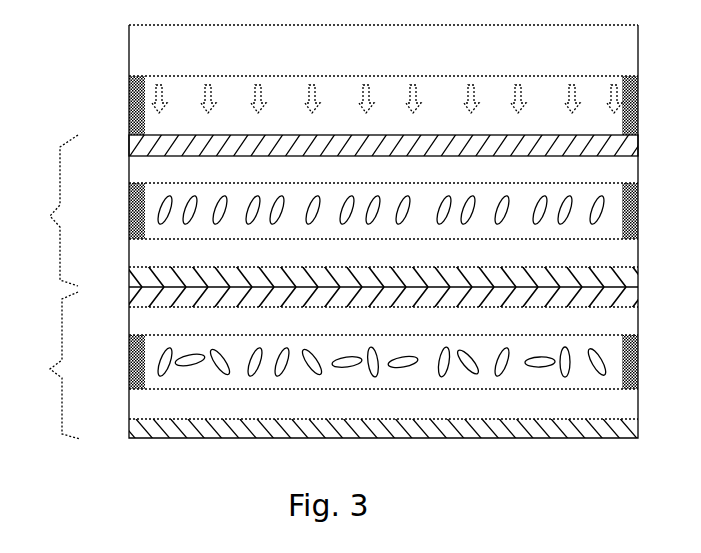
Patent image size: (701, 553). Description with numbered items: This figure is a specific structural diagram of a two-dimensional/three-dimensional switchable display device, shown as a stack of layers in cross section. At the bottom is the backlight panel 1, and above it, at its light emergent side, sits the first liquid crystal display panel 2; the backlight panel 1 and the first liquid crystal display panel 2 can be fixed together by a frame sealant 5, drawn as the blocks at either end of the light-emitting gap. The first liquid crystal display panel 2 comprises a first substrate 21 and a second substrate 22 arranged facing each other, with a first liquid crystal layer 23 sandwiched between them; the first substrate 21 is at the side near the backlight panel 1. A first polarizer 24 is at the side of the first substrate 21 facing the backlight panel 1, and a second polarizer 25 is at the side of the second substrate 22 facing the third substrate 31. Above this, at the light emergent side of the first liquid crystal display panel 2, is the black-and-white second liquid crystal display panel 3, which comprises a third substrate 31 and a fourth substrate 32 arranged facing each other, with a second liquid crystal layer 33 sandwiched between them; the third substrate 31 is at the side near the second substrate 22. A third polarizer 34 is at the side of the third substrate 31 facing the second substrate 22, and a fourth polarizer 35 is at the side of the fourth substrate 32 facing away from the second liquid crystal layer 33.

The backlight panel 1 is at (148, 50).
The frame sealant 5 is at (129, 106).
The first liquid crystal display panel 2 is at (340, 210).
The first polarizer 24 is at (160, 143).
The first substrate 21 is at (150, 168).
The first liquid crystal layer 23 is at (150, 217).
The second substrate 22 is at (158, 252).
The second polarizer 25 is at (150, 279).
The second liquid crystal display panel 3 is at (344, 363).
The third polarizer 34 is at (160, 297).
The third substrate 31 is at (150, 320).
The second liquid crystal layer 33 is at (150, 365).
The fourth substrate 32 is at (160, 400).
The fourth polarizer 35 is at (160, 428).